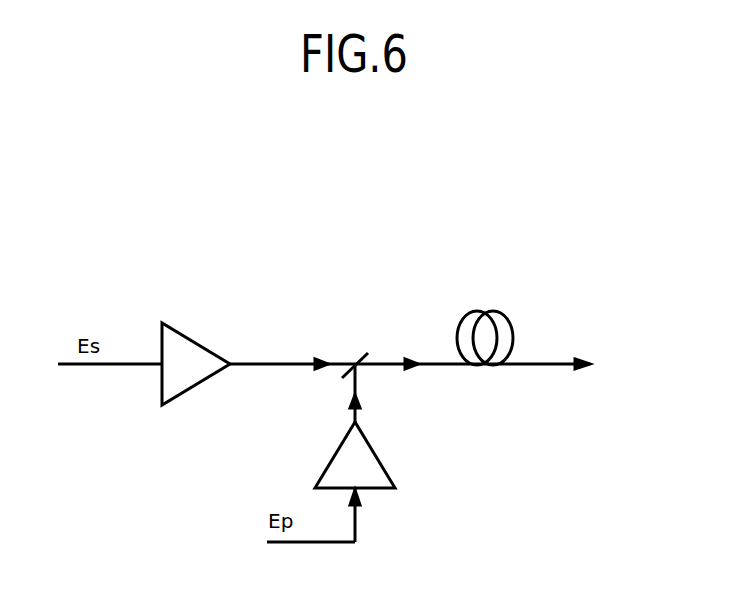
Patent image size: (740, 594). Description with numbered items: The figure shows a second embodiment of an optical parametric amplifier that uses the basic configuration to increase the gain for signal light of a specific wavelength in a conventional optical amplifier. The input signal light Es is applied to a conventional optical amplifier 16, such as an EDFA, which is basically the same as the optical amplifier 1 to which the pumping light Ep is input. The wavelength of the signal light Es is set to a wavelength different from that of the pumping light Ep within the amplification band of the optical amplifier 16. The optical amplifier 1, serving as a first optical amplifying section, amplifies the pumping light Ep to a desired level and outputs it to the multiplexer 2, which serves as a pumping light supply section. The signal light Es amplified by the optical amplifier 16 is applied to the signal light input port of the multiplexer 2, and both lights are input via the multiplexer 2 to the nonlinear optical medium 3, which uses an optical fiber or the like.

The optical amplifier 1 is at (372, 446).
The multiplexer 2 is at (353, 361).
The nonlinear optical medium 3 is at (497, 312).
The optical amplifier 16 is at (188, 337).